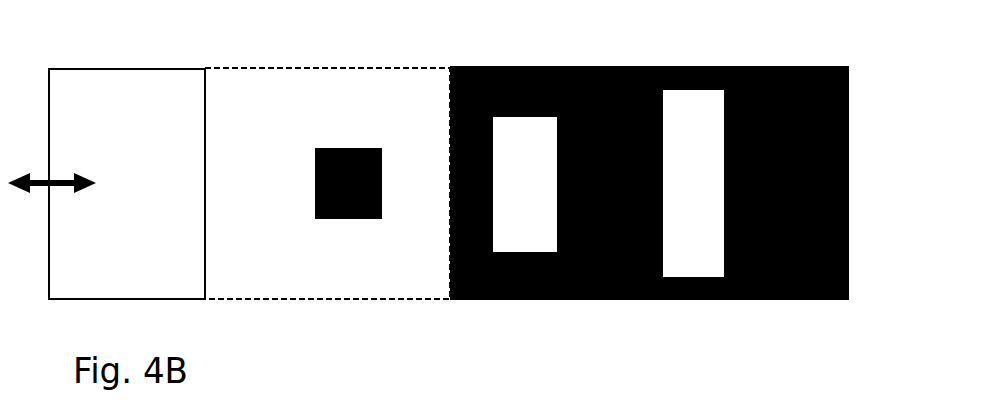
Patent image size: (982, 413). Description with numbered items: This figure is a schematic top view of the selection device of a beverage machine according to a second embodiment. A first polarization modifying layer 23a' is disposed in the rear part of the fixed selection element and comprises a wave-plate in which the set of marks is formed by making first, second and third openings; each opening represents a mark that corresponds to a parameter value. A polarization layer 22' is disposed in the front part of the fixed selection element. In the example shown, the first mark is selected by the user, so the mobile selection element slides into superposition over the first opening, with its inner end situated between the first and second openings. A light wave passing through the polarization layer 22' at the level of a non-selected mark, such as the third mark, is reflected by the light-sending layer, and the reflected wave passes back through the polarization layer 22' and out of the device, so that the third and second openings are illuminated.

The first polarization modifying layer 23a' is at (127, 157).
The polarization layer 22' is at (649, 153).